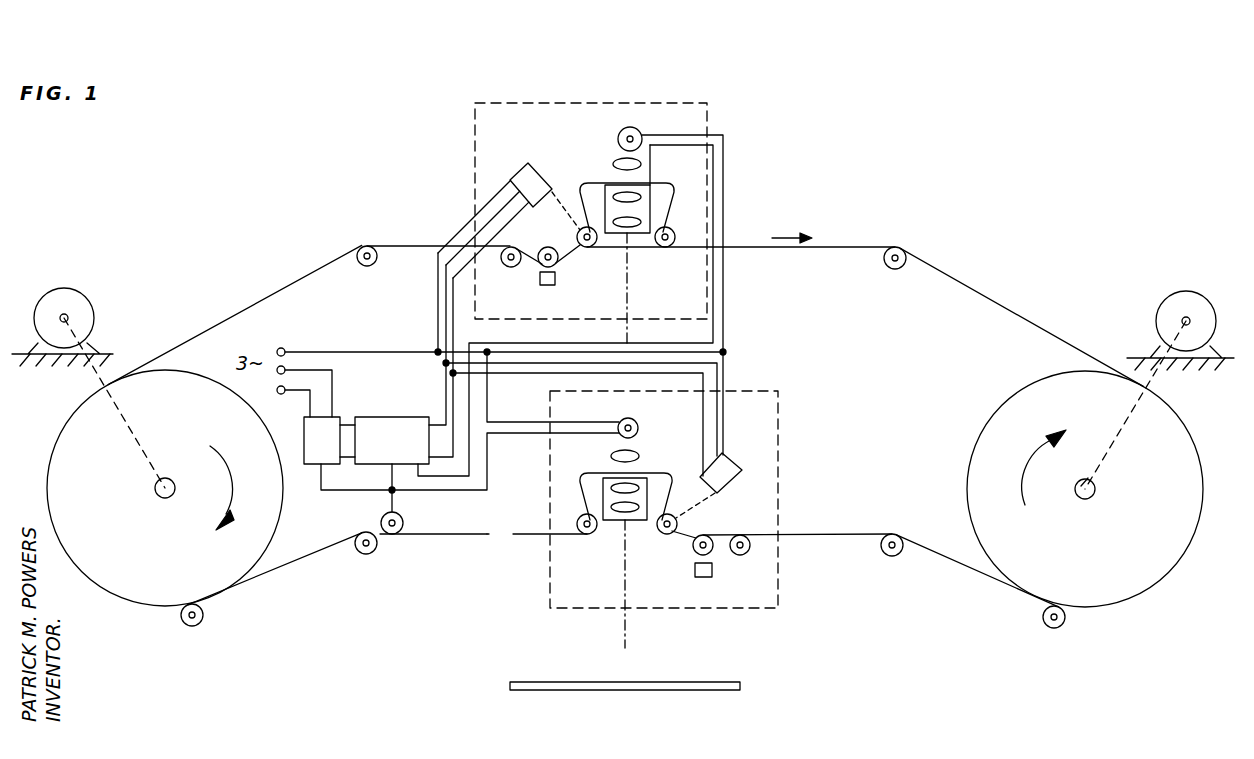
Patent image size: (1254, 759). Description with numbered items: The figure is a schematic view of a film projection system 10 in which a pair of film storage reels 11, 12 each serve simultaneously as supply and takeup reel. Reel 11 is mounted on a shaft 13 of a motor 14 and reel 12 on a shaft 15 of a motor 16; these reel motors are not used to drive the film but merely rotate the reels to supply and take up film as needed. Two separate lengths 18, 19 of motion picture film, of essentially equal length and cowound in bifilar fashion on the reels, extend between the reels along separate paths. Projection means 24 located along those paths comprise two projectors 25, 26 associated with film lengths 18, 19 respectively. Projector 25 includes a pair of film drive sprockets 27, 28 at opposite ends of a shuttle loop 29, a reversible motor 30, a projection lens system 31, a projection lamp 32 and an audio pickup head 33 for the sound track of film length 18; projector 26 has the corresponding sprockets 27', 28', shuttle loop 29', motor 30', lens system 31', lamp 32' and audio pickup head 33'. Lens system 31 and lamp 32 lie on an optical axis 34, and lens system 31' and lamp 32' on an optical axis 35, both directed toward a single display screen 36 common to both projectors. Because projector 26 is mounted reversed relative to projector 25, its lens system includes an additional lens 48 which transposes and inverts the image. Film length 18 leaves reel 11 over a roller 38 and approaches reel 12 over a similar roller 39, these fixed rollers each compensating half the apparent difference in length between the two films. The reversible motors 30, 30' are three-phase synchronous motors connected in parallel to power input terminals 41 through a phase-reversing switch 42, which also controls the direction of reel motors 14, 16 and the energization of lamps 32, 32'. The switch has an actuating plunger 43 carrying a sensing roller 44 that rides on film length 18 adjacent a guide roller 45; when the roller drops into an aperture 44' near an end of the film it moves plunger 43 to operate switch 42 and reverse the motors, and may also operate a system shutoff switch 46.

The projection system 10 is at (873, 226).
The film storage reel 11 is at (72, 437).
The film storage reel 12 is at (1152, 574).
The shaft 13 is at (92, 372).
The motor 14 is at (95, 296).
The shaft 15 is at (1162, 380).
The motor 16 is at (1166, 300).
The film length 18 is at (453, 541).
The film length 19 is at (382, 244).
The projection means 24 is at (422, 170).
The projector 25 is at (782, 390).
The projector 26 is at (658, 96).
The film drive sprocket 27 is at (658, 542).
The film drive sprocket 27' is at (549, 264).
The film drive sprocket 28 is at (576, 542).
The film drive sprocket 28' is at (664, 256).
The shuttle loop 29 is at (631, 475).
The shuttle loop 29' is at (640, 192).
The reversible motor 30 is at (745, 482).
The reversible motor 30' is at (532, 183).
The projection lens system 31 is at (597, 449).
The projection lens system 31' is at (594, 161).
The projection lamp 32 is at (646, 418).
The projection lamp 32' is at (613, 127).
The audio pickup head 33 is at (722, 582).
The audio pickup head 33' is at (522, 291).
The optical axis 34 is at (625, 636).
The optical axis 35 is at (629, 306).
The display screen 36 is at (534, 682).
The roller 38 is at (190, 628).
The roller 39 is at (1054, 628).
The power input terminals 41 is at (286, 388).
The phase-reversing switch 42 is at (392, 417).
The actuating plunger 43 is at (388, 474).
The sensing roller 44 is at (421, 519).
The aperture 44' is at (500, 555).
The guide roller 45 is at (364, 556).
The system shutoff switch 46 is at (304, 432).
The lens 48 is at (648, 210).